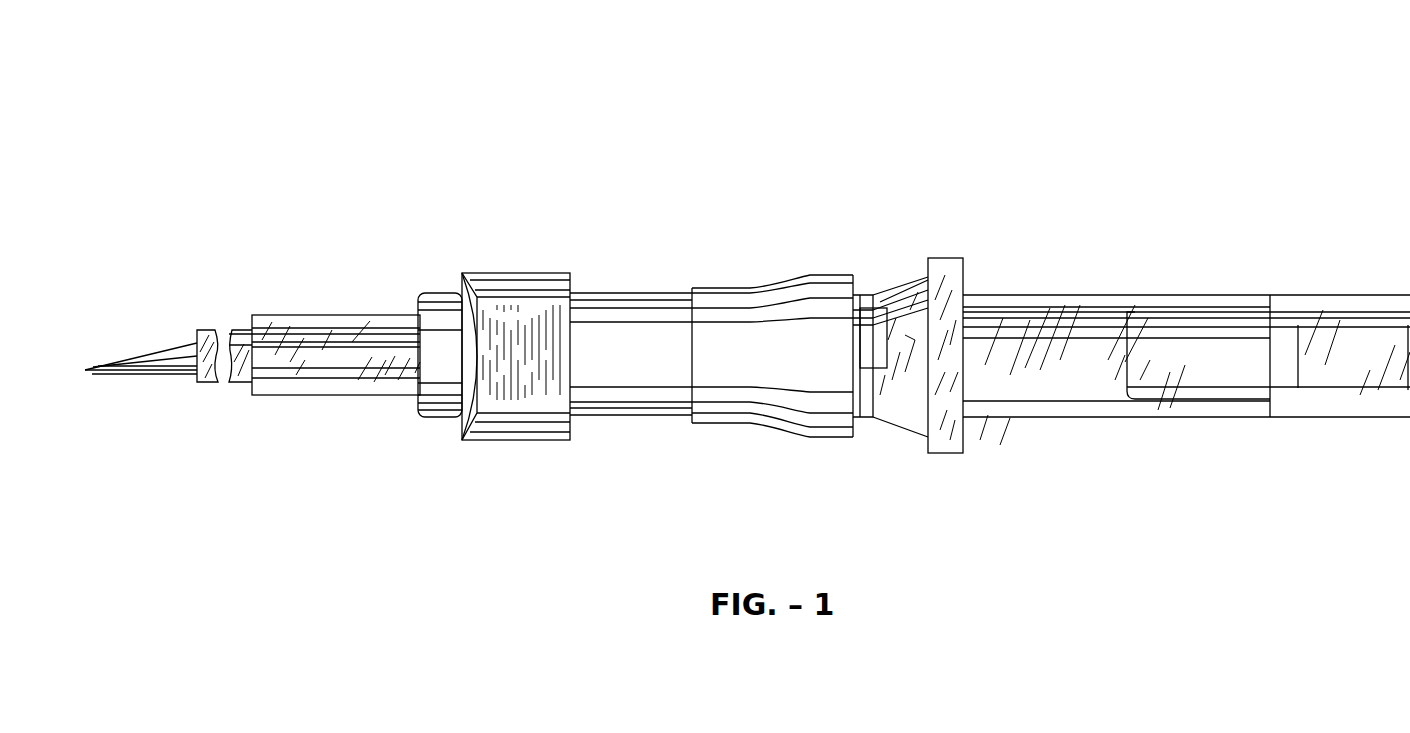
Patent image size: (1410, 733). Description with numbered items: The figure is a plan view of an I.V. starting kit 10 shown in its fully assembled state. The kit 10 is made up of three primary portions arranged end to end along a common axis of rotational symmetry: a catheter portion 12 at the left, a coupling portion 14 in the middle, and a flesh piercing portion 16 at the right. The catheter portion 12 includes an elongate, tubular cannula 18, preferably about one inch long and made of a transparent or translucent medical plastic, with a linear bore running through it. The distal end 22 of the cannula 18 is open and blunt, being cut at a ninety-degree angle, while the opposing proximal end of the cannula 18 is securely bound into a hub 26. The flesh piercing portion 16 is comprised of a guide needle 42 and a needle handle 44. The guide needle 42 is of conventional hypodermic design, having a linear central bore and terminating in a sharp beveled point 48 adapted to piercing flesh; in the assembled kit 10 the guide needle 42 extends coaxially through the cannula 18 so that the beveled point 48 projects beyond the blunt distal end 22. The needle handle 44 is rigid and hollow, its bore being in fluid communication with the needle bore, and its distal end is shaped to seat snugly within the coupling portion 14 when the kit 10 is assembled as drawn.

The I.V. starting kit 10 is at (316, 89).
The catheter portion 12 is at (450, 486).
The coupling portion 14 is at (757, 268).
The flesh piercing portion 16 is at (1077, 251).
The cannula 18 is at (205, 330).
The distal end 22 is at (197, 336).
The hub 26 is at (478, 440).
The guide needle 42 is at (315, 352).
The needle handle 44 is at (1040, 417).
The beveled point 48 is at (86, 372).